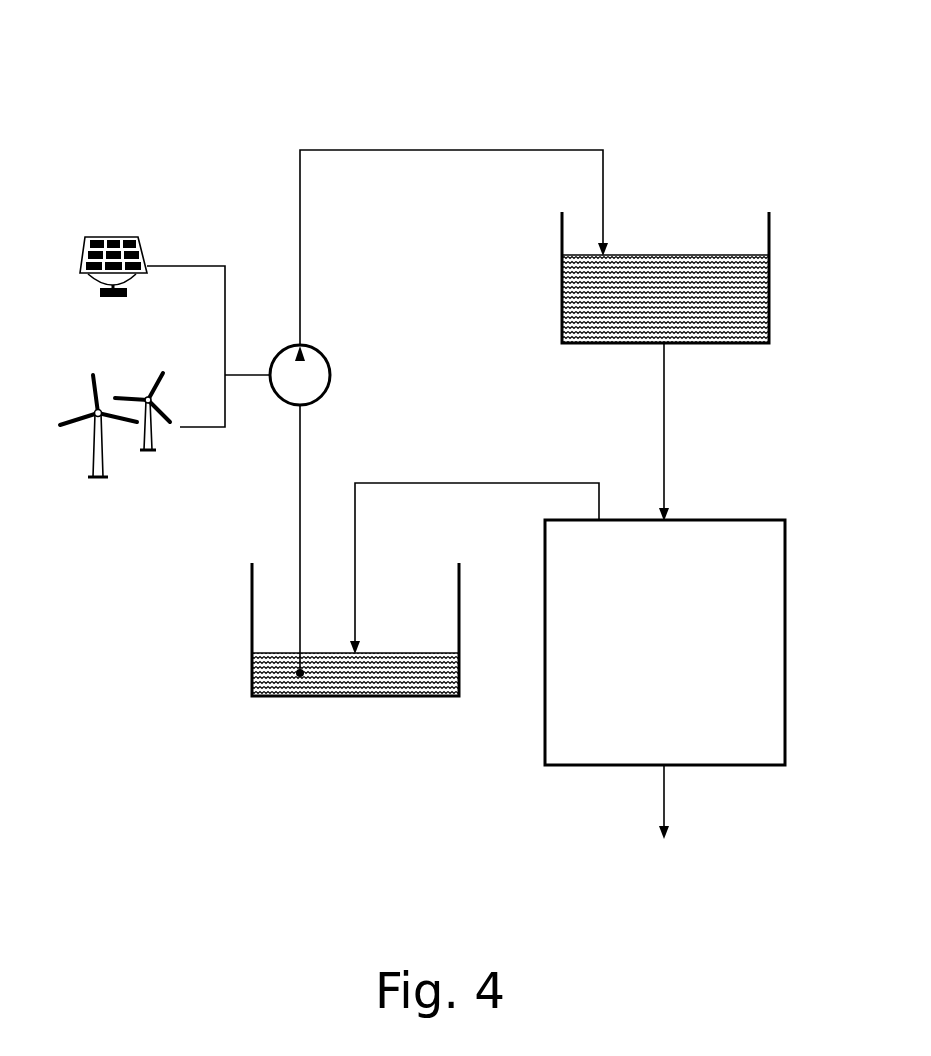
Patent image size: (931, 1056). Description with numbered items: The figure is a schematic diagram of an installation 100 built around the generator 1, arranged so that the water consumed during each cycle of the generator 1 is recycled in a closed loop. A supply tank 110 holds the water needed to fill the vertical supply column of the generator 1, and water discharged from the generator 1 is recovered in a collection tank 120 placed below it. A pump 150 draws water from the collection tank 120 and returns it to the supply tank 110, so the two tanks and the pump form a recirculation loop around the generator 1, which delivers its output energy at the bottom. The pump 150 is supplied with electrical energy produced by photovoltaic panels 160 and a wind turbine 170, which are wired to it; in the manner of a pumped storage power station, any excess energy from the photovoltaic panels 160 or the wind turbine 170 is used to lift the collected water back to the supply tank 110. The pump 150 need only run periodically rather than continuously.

The installation 100 is at (205, 101).
The supply tank 110 is at (770, 296).
The collection tank 120 is at (252, 665).
The pump 150 is at (318, 350).
The photovoltaic panels 160 is at (85, 242).
The wind turbine 170 is at (87, 440).
The generator 1 is at (657, 658).